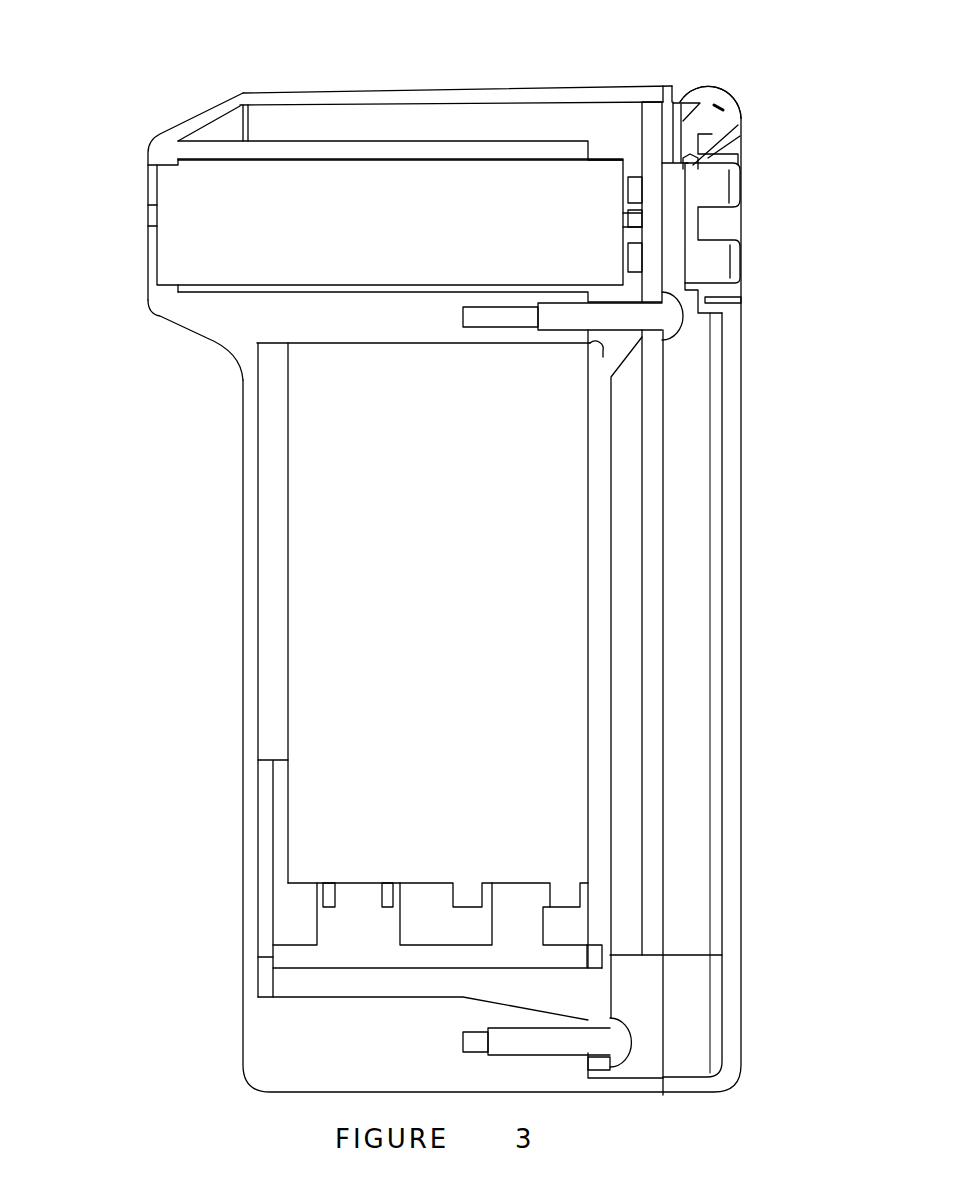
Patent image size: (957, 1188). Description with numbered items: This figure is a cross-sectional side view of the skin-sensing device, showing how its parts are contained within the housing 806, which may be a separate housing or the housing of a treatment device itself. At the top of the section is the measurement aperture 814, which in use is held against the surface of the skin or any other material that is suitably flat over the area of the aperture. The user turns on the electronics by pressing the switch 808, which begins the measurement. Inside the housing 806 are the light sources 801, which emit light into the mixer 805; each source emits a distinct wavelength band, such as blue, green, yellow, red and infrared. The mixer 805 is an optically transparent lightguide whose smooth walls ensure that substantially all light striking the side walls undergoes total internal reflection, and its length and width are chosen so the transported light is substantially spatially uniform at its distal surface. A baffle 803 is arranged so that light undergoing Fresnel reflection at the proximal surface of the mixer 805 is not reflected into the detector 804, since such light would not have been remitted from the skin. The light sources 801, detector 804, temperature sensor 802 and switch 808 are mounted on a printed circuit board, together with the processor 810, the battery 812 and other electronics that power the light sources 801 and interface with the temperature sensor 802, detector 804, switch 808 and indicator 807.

The light sources 801 is at (636, 178).
The temperature sensor 802 is at (733, 110).
The baffle 803 is at (635, 225).
The detector 804 is at (637, 260).
The mixer 805 is at (257, 256).
The housing 806 is at (733, 621).
The indicator 807 is at (670, 133).
The switch 808 is at (698, 221).
The processor 810 is at (650, 374).
The battery 812 is at (323, 738).
The measurement aperture 814 is at (148, 205).